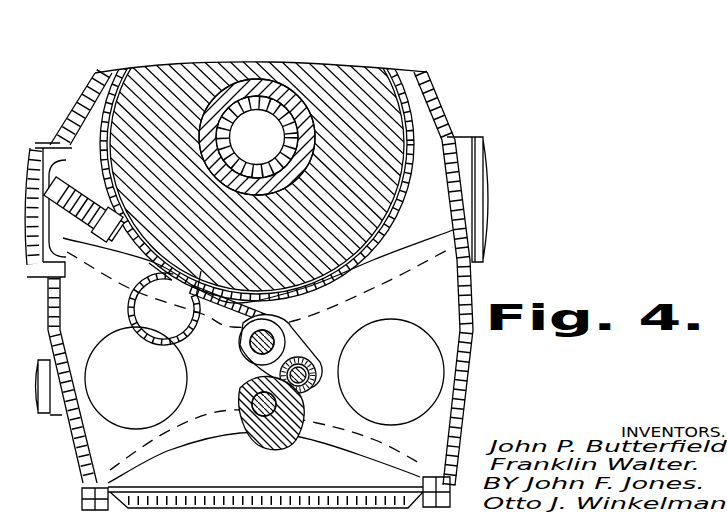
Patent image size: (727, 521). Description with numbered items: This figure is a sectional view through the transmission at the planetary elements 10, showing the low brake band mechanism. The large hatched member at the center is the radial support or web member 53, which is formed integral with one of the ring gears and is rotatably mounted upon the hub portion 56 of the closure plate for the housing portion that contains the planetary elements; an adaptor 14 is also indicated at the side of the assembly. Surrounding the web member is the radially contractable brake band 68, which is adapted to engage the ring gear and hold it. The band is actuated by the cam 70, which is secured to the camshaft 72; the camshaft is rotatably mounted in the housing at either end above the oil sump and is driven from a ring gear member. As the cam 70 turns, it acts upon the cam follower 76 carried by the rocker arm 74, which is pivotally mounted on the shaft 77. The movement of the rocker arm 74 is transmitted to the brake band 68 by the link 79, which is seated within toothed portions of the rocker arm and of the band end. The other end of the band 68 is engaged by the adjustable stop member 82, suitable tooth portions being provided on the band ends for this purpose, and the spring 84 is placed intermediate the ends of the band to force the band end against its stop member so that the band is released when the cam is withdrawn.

The transmission planetary elements 10 is at (376, 42).
The adaptor 14 is at (443, 121).
The radial support or web member 53 is at (367, 69).
The hub portion 56 is at (288, 62).
The brake band 68 is at (433, 101).
The cam 70 is at (287, 438).
The camshaft 72 is at (253, 428).
The rocker arm 74 is at (292, 344).
The cam follower 76 is at (320, 377).
The shaft 77 is at (243, 341).
The link 79 is at (313, 304).
The adjustable stop member 82 is at (133, 263).
The spring 84 is at (130, 311).